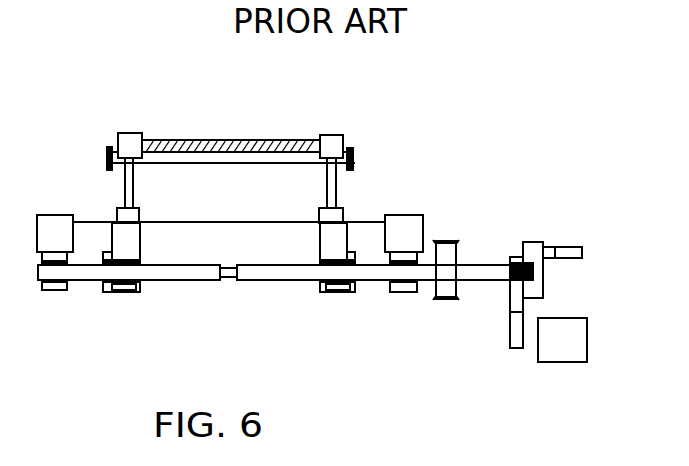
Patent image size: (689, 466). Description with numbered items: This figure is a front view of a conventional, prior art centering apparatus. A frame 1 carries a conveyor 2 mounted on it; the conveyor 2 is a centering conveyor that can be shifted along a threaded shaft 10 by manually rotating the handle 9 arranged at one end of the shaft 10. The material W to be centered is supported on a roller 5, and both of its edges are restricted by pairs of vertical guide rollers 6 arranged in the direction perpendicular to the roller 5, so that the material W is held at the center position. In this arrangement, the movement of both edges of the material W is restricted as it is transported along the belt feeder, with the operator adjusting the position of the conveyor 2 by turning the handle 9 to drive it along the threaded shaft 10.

The frame 1 is at (572, 318).
The conveyor 2 is at (403, 212).
The roller 5 is at (213, 158).
The vertical guide rollers 6 is at (142, 133).
The handle 9 is at (537, 242).
The threaded shaft 10 is at (260, 285).
The material W is at (270, 142).